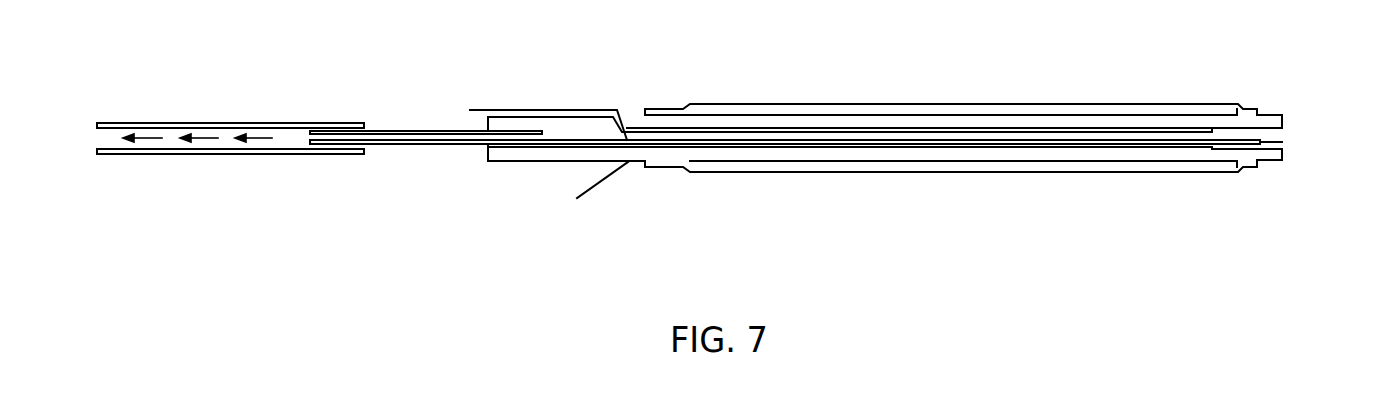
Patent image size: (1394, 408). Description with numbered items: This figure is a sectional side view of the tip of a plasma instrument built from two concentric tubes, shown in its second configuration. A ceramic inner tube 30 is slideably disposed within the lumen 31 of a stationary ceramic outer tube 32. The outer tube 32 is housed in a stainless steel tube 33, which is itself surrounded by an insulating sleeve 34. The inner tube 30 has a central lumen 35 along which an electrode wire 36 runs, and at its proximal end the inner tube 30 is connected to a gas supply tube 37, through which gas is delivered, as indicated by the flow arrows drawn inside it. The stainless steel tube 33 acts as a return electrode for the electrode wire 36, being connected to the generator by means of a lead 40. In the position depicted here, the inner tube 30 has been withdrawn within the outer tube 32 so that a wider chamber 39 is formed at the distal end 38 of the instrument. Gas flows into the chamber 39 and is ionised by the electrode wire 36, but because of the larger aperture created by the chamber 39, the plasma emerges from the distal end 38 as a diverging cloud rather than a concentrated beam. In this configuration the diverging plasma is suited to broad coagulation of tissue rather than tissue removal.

The inner tube 30 is at (386, 166).
The lumen 31 is at (465, 161).
The outer tube 32 is at (532, 162).
The stainless steel tube 33 is at (930, 163).
The insulating sleeve 34 is at (1052, 173).
The central lumen 35 is at (445, 138).
The electrode wire 36 is at (1258, 142).
The gas supply tube 37 is at (158, 157).
The distal end 38 is at (1290, 147).
The chamber 39 is at (1272, 132).
The lead 40 is at (590, 193).